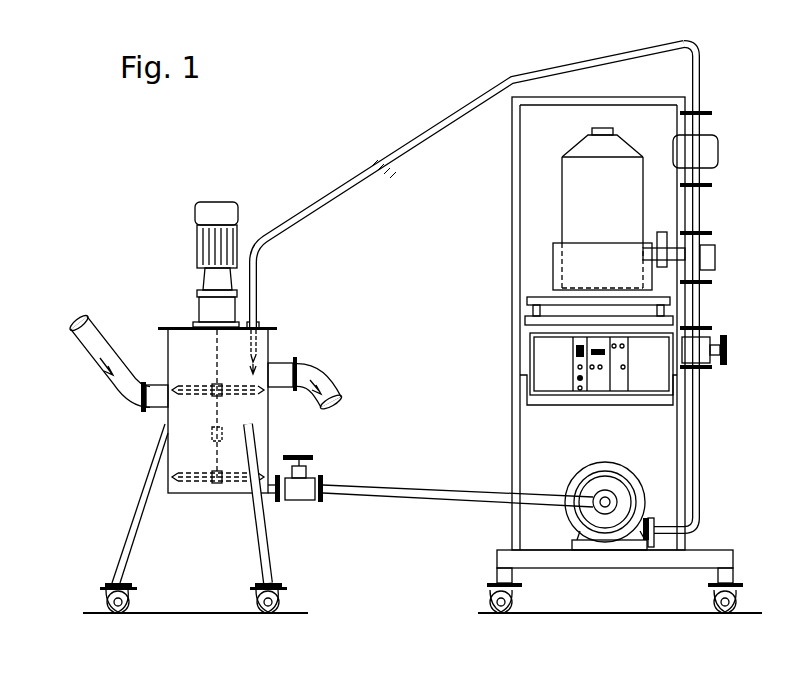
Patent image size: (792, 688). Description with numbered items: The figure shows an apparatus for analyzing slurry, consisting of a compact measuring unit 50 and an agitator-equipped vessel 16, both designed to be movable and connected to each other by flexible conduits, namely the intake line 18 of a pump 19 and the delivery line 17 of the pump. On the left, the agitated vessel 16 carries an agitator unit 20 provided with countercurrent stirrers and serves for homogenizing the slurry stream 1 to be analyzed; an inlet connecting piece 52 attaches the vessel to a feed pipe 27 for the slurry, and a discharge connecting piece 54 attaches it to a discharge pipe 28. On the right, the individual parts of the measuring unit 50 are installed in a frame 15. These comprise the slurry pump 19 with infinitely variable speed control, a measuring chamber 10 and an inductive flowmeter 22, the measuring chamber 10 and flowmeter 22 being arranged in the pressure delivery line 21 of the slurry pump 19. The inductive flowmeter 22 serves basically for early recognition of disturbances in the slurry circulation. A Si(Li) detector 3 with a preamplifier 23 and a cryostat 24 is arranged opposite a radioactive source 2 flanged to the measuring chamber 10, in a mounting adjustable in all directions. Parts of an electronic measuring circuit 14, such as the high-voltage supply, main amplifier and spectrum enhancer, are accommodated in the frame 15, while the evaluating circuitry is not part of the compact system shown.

The slurry stream 1 is at (182, 376).
The radioactive source 2 is at (716, 258).
The Si (Li) detector 3 is at (690, 228).
The measuring chamber 10 is at (700, 270).
The electronic measuring circuit 14 is at (622, 378).
The frame 15 is at (660, 541).
The agitated vessel 16 is at (181, 413).
The delivery line 17 is at (358, 180).
The intake line 18 is at (380, 492).
The slurry pump 19 is at (623, 502).
The agitator unit 20 is at (197, 308).
The pressure delivery line 21 is at (701, 427).
The inductive flowmeter 22 is at (710, 146).
The preamplifier 23 is at (663, 231).
The cryostat 24 is at (627, 263).
The feed pipe 27 is at (88, 352).
The discharge pipe 28 is at (325, 405).
The measuring unit 50 is at (712, 244).
The inlet connecting piece 52 is at (158, 392).
The discharge connecting piece 54 is at (279, 370).